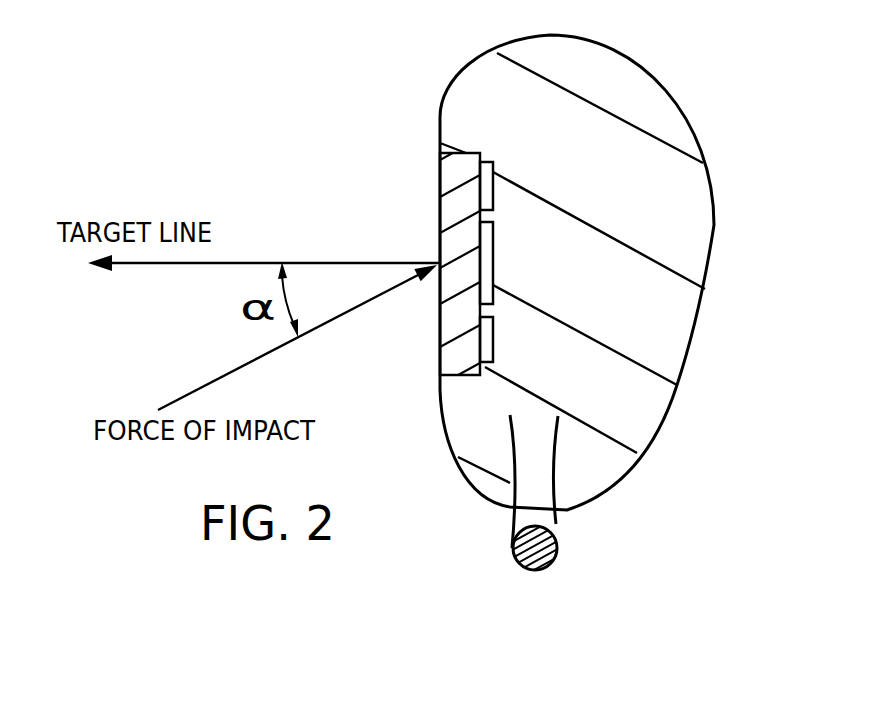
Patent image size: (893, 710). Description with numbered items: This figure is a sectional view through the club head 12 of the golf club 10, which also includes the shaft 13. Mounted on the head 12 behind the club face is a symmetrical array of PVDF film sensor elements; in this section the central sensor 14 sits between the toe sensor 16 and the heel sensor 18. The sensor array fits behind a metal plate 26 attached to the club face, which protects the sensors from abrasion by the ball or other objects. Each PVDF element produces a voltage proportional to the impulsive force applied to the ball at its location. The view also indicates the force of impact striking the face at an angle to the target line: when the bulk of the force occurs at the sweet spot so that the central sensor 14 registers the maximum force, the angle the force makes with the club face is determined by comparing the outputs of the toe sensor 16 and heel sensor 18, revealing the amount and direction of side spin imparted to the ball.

The golf club 10 is at (659, 54).
The club head 12 is at (715, 233).
The shaft 13 is at (558, 523).
The central sensor 14 is at (495, 262).
The toe sensor 16 is at (493, 172).
The heel sensor 18 is at (493, 348).
The metal plate 26 is at (440, 216).